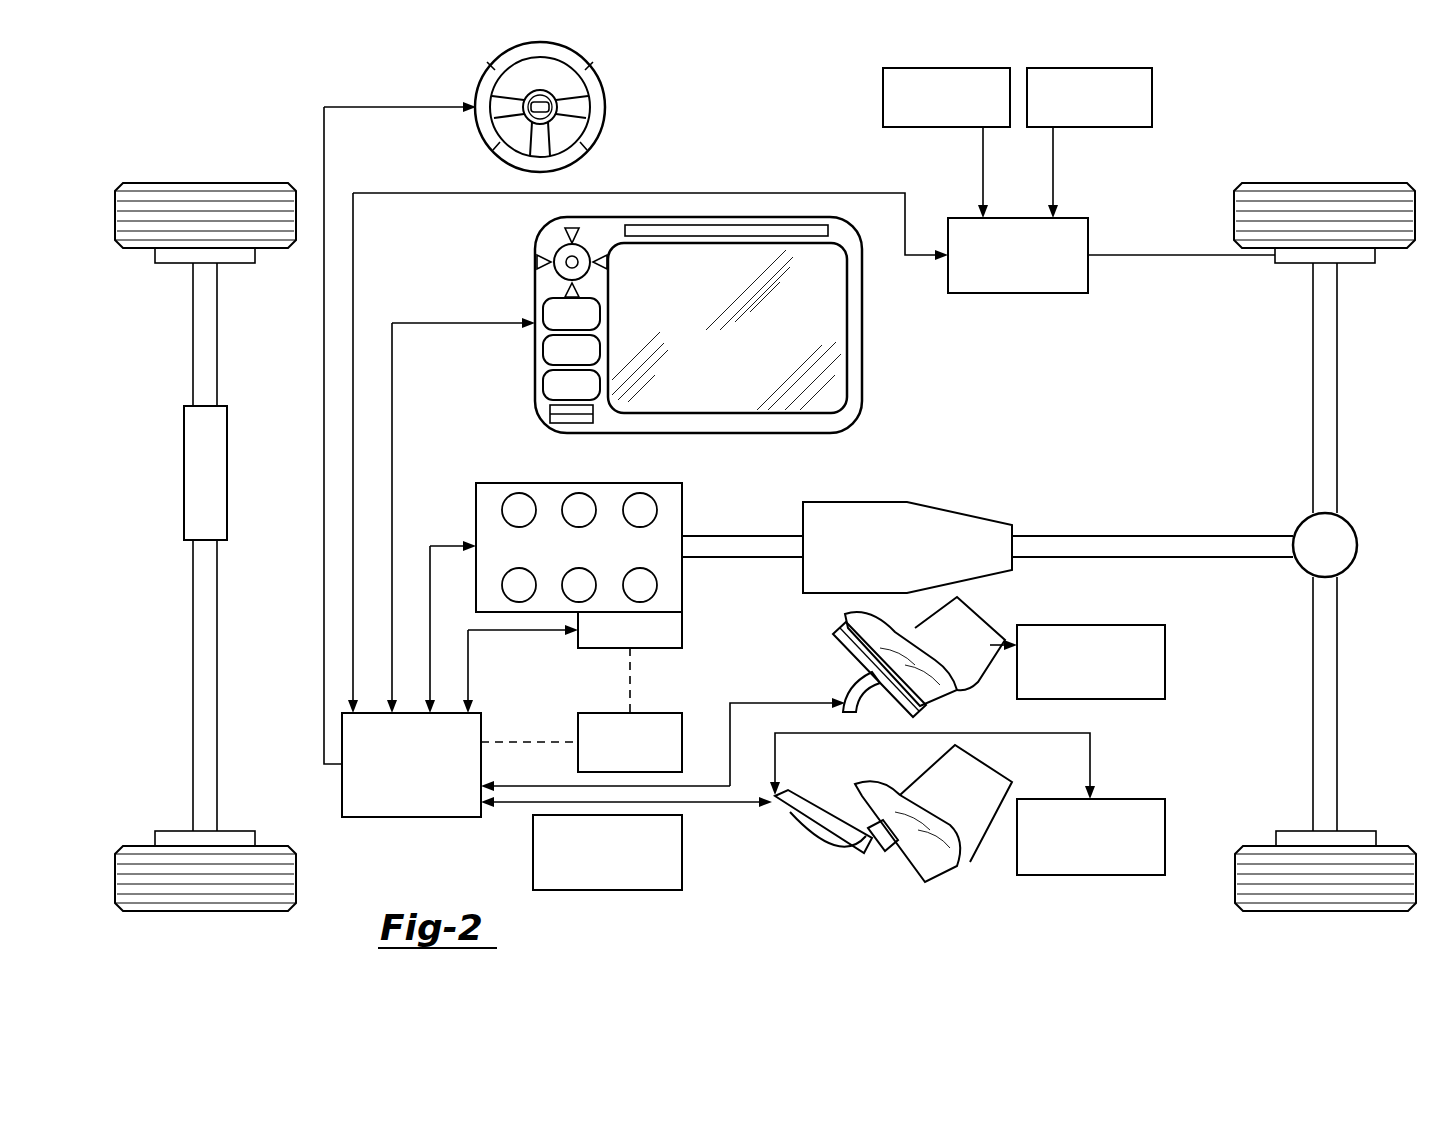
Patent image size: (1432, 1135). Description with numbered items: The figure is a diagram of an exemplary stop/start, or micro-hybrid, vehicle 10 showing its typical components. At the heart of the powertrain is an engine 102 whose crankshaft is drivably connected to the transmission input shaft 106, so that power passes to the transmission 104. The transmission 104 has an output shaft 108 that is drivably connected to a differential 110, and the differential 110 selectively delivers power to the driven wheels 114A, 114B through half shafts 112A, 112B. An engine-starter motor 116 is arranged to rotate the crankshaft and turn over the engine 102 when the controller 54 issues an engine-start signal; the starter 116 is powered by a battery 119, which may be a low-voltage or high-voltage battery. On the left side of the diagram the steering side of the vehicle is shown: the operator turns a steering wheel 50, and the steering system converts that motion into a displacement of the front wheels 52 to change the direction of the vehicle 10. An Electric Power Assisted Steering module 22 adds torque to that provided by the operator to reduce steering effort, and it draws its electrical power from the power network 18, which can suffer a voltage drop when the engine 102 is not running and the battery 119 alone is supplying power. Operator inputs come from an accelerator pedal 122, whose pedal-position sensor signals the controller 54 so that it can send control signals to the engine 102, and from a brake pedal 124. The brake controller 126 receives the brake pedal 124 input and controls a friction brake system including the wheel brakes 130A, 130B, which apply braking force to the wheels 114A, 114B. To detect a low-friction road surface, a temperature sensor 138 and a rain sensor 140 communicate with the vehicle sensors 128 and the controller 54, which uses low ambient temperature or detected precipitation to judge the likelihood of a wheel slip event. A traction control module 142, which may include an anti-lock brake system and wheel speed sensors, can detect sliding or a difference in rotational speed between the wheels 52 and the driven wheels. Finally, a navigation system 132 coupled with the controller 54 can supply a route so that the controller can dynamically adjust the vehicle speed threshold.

The vehicle 10 is at (236, 94).
The power network 18 is at (638, 890).
The Electric Power Assisted Steering (EPAS) module 22 is at (227, 470).
The steering wheel 50 is at (605, 105).
The front wheels 52 is at (215, 183).
The controller 54 is at (410, 817).
The engine 102 is at (510, 483).
The transmission 104 is at (855, 502).
The transmission input shaft 106 is at (742, 534).
The output shaft 108 is at (1120, 536).
The differential 110 is at (1302, 566).
The half shaft 112A is at (1338, 380).
The half shaft 112B is at (1338, 660).
The driven wheel 114A is at (1315, 183).
The driven wheel 114B is at (1320, 911).
The engine-starter motor 116 is at (682, 632).
The battery 119 is at (580, 713).
The accelerator pedal 122 is at (838, 660).
The brake pedal 124 is at (800, 835).
The brake controller 126 is at (1140, 799).
The vehicle sensors 128 is at (1073, 218).
The wheel brake 130A is at (1340, 265).
The wheel brake 130B is at (1340, 831).
The navigation system 132 is at (862, 325).
The temperature sensor 138 is at (883, 92).
The rain sensor 140 is at (1152, 95).
The traction control module 142 is at (1140, 625).